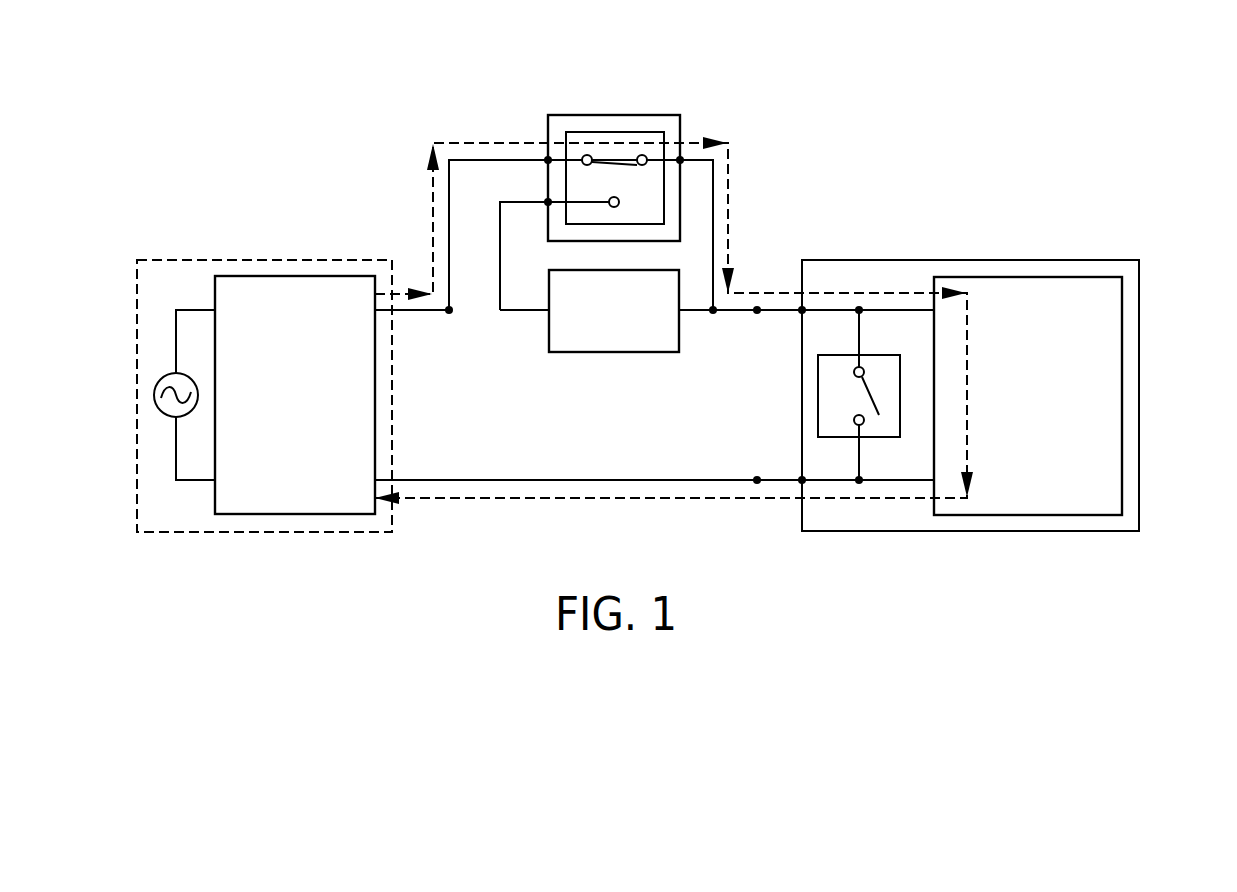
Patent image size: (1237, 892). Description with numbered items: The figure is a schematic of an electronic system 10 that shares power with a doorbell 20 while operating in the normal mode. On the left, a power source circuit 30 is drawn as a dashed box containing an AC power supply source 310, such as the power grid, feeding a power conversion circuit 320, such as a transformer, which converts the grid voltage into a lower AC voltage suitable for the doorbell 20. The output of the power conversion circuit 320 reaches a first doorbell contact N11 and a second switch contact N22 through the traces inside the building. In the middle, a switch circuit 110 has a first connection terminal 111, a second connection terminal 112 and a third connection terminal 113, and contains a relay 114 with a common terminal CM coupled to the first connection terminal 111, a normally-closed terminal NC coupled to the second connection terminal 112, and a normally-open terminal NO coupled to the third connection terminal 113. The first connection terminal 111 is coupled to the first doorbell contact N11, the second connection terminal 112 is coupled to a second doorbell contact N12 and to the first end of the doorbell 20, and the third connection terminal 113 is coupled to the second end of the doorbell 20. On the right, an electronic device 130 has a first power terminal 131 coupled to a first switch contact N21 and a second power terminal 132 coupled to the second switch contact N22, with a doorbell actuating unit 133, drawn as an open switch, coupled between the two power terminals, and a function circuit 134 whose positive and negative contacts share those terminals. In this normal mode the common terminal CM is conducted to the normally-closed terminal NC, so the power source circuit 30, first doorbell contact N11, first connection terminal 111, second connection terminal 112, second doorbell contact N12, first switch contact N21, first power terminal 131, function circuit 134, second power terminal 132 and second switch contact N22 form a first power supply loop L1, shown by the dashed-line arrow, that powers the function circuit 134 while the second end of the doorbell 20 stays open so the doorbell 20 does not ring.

The electronic system 10 is at (1203, 106).
The doorbell 20 is at (549, 324).
The power source circuit 30 is at (136, 278).
The AC power supply source 310 is at (187, 374).
The power conversion circuit 320 is at (292, 276).
The switch circuit 110 is at (683, 130).
The first connection terminal 111 is at (548, 158).
The second connection terminal 112 is at (682, 162).
The third connection terminal 113 is at (547, 200).
The relay 114 is at (615, 132).
The common terminal CM is at (587, 155).
The normally-closed terminal NC is at (642, 155).
The normally-open terminal NO is at (619, 201).
The first power supply loop L1 is at (462, 143).
The first doorbell contact N11 is at (450, 314).
The second doorbell contact N12 is at (712, 314).
The first switch contact N21 is at (758, 314).
The second switch contact N22 is at (757, 484).
The electronic device 130 is at (1141, 278).
The first power terminal 131 is at (801, 308).
The second power terminal 132 is at (804, 484).
The doorbell actuating unit 133 is at (880, 355).
The function circuit 134 is at (1028, 277).